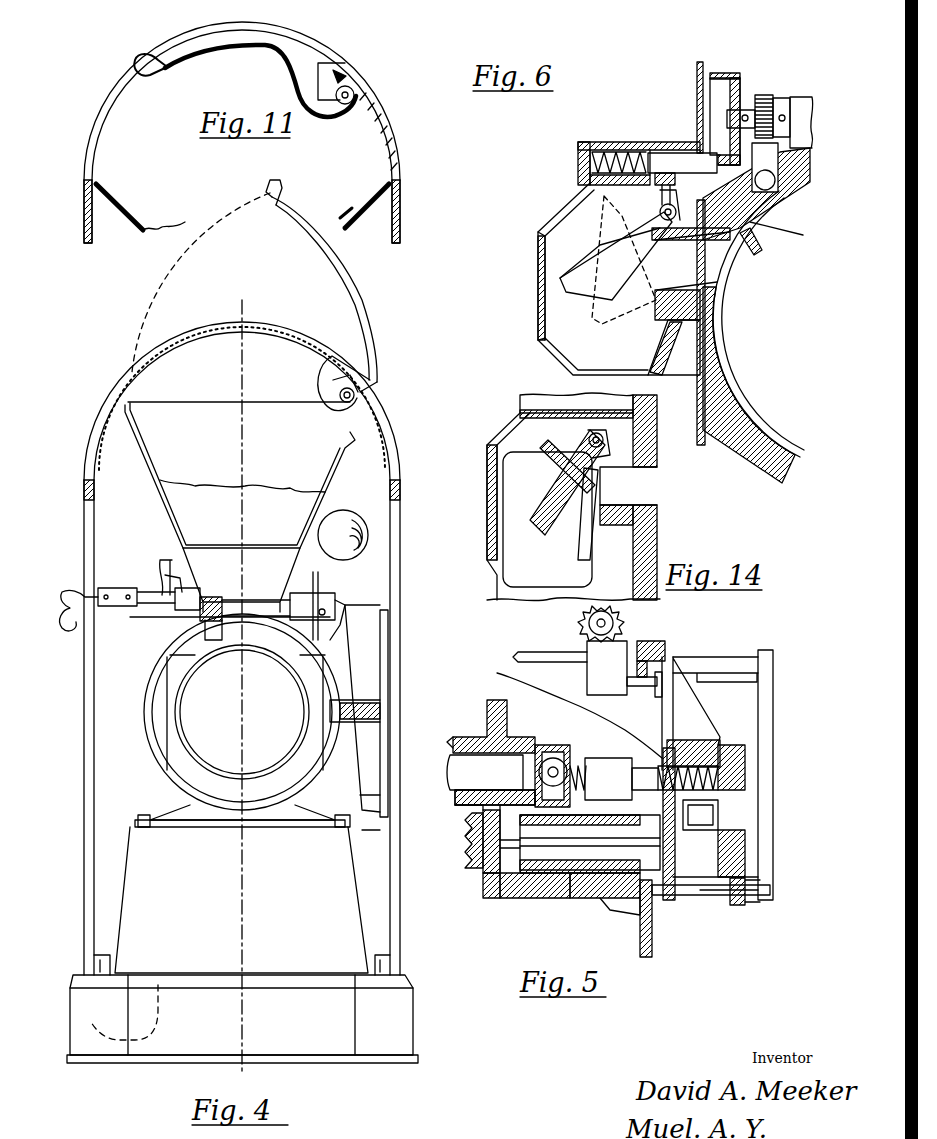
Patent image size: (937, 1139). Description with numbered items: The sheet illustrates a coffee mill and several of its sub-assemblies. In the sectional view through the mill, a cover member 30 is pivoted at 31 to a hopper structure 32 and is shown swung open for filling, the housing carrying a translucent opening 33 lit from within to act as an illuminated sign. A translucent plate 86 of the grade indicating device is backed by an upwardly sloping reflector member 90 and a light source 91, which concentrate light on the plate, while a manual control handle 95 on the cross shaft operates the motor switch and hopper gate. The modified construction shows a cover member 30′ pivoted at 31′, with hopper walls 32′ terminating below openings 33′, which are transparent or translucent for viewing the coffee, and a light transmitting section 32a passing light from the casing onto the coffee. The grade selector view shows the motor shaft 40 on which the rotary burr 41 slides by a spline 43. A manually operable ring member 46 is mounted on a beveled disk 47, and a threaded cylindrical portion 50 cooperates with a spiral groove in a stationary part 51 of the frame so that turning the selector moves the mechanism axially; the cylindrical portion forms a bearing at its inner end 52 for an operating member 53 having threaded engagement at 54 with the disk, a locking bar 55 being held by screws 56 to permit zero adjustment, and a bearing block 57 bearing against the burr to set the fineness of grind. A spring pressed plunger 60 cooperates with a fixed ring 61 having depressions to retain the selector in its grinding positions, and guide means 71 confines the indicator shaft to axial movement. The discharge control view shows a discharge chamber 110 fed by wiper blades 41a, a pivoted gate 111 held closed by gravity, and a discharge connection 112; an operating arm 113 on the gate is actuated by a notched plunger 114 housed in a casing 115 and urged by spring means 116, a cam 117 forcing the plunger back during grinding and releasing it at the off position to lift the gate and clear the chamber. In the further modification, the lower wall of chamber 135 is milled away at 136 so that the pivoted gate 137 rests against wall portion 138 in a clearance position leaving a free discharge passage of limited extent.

In FIG. 11, the lid (closed position) 30′ is at (172, 56).
In FIG. 11, the hinge pin 31′ is at (353, 87).
In FIG. 11, the openings 33′ is at (96, 146).
In FIG. 11, the hopper walls 32′ is at (117, 208).
In FIG. 11, the light transmitting section 32a is at (358, 205).
In FIG. 4, the cover member 30 is at (356, 268).
In FIG. 4, the pivot 31 is at (358, 400).
In FIG. 4, the translucent opening 33 is at (96, 430).
In FIG. 4, the hopper structure 32 is at (335, 448).
In FIG. 4, the light source 91 is at (367, 540).
In FIG. 4, the reflector member 90 is at (330, 598).
In FIG. 4, the manual control handle 95 is at (71, 626).
In FIG. 4, the plate 86 is at (390, 664).
In FIG. 6, the cam 117 is at (740, 76).
In FIG. 6, the spring means 116 is at (630, 165).
In FIG. 6, the casing 115 is at (600, 160).
In FIG. 6, the notched plunger 114 is at (682, 160).
In FIG. 6, the operating arm 113 is at (665, 208).
In FIG. 6, the pivoted gate 111 is at (600, 265).
In FIG. 6, the discharge connection 112 is at (540, 332).
In FIG. 6, the discharge chamber 110 is at (686, 325).
In FIG. 6, the rotary burr 41 is at (713, 333).
In FIG. 5, the rotary burr 41 is at (468, 860).
In FIG. 6, the wiper blades 41a is at (748, 248).
In FIG. 5, the wiper blades 41a is at (488, 890).
In FIG. 14, the chamber 135 is at (630, 490).
In FIG. 14, the pivoted gate 137 is at (558, 488).
In FIG. 14, the wall portion 138 is at (590, 436).
In FIG. 14, the milled away portion 136 is at (592, 508).
In FIG. 5, the guide means 71 is at (633, 668).
In FIG. 5, the ring member 46 is at (773, 663).
In FIG. 5, the beveled disk 47 is at (708, 706).
In FIG. 5, the motor shaft 40 is at (470, 778).
In FIG. 5, the spline 43 is at (528, 758).
In FIG. 5, the bearing block 57 is at (578, 762).
In FIG. 5, the operating member 53 is at (608, 760).
In FIG. 5, the threaded engagement 54 is at (715, 780).
In FIG. 5, the locking bar 55 is at (664, 790).
In FIG. 5, the screws 56 is at (720, 826).
In FIG. 5, the inner end bearing 52 is at (600, 812).
In FIG. 5, the threaded cylindrical portion 50 is at (535, 900).
In FIG. 5, the stationary part 51 is at (585, 900).
In FIG. 5, the fixed ring 61 is at (655, 915).
In FIG. 5, the spring pressed plunger 60 is at (737, 906).